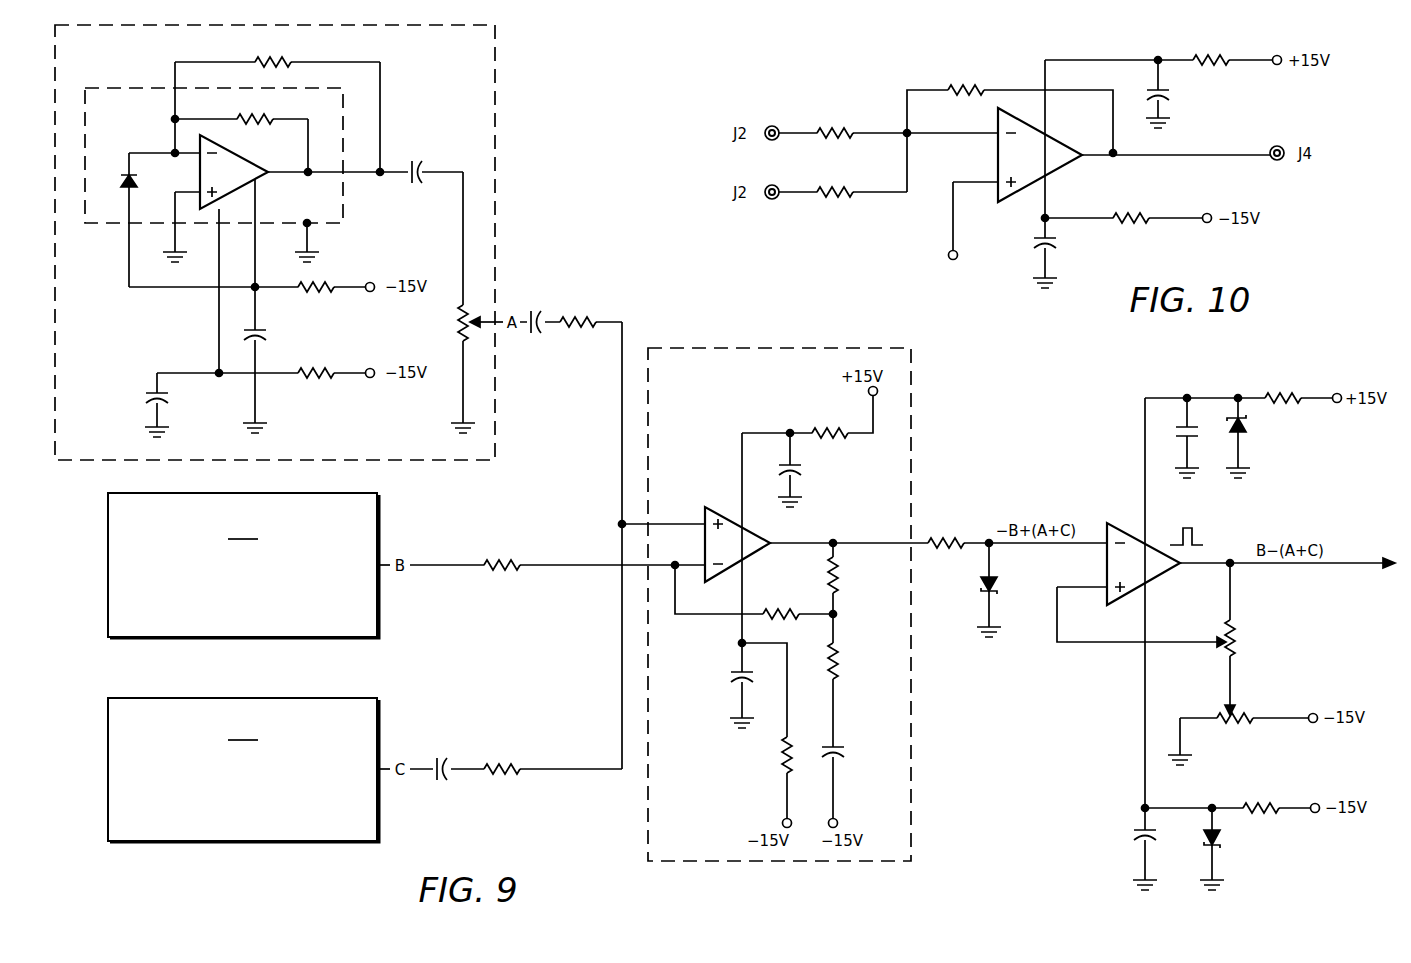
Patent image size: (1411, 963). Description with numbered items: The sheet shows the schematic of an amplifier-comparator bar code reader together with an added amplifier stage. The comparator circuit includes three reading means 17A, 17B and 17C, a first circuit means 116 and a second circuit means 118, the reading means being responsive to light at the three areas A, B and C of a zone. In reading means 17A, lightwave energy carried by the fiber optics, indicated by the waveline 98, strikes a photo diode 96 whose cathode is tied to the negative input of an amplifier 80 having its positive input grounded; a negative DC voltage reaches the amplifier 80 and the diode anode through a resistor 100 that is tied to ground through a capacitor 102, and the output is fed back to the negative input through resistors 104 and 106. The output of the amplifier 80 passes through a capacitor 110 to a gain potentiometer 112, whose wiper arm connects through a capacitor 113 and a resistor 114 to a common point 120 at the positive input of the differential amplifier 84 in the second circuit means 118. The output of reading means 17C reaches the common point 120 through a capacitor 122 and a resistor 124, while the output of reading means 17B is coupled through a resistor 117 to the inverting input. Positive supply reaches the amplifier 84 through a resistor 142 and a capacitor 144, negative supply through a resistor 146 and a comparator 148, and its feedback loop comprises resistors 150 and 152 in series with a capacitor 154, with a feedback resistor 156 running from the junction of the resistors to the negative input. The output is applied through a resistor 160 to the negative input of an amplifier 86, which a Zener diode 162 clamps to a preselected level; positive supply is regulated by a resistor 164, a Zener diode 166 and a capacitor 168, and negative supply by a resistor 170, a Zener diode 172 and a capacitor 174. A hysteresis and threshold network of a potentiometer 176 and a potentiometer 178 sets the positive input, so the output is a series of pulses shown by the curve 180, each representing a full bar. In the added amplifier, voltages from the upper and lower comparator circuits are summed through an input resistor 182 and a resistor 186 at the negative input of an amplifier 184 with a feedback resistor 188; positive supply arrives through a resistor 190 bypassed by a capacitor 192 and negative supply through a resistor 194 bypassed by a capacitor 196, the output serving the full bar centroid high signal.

In FIG. 9, the reading means 17A is at (495, 68).
In FIG. 9, the reading means 17B is at (243, 565).
In FIG. 9, the reading means 17C is at (243, 770).
In FIG. 9, the amplifier 80 is at (218, 166).
In FIG. 9, the differential amplifier 84 is at (723, 506).
In FIG. 9, the amplifier 86 is at (1106, 557).
In FIG. 9, the photo diode 96 is at (137, 183).
In FIG. 9, the waveline 98 is at (118, 176).
In FIG. 9, the resistor 100 is at (325, 282).
In FIG. 9, the capacitor 102 is at (270, 332).
In FIG. 9, the resistor 104 is at (290, 60).
In FIG. 9, the resistor 106 is at (245, 116).
In FIG. 9, the capacitor 110 is at (420, 163).
In FIG. 9, the gain potentiometer 112 is at (456, 310).
In FIG. 9, the capacitor 113 is at (535, 311).
In FIG. 9, the resistor 114 is at (580, 318).
In FIG. 9, the first circuit means 116 is at (584, 247).
In FIG. 9, the resistor 117 is at (502, 560).
In FIG. 9, the second circuit means 118 is at (721, 346).
In FIG. 9, the common point 120 is at (618, 522).
In FIG. 9, the capacitor 122 is at (440, 760).
In FIG. 9, the resistor 124 is at (506, 763).
In FIG. 9, the resistor 142 is at (820, 430).
In FIG. 9, the capacitor 144 is at (806, 466).
In FIG. 9, the resistor 146 is at (777, 758).
In FIG. 9, the comparator 148 is at (732, 677).
In FIG. 9, the resistor 150 is at (842, 574).
In FIG. 9, the resistor 152 is at (842, 665).
In FIG. 9, the capacitor 154 is at (845, 752).
In FIG. 9, the feedback resistor 156 is at (796, 612).
In FIG. 9, the resistor 160 is at (944, 538).
In FIG. 9, the Zener diode 162 is at (978, 584).
In FIG. 9, the resistor 164 is at (1287, 393).
In FIG. 9, the Zener diode 166 is at (1250, 428).
In FIG. 9, the capacitor 168 is at (1176, 432).
In FIG. 9, the resistor 170 is at (1268, 805).
In FIG. 9, the Zener diode 172 is at (1222, 837).
In FIG. 9, the capacitor 174 is at (1135, 837).
In FIG. 9, the potentiometer 176 is at (1252, 639).
In FIG. 9, the potentiometer 178 is at (1237, 728).
In FIG. 9, the curve 180 is at (1197, 532).
In FIG. 10, the input resistor 182 is at (841, 186).
In FIG. 10, the amplifier 184 is at (998, 152).
In FIG. 10, the resistor 186 is at (846, 126).
In FIG. 10, the resistor 188 is at (969, 86).
In FIG. 10, the resistor 190 is at (1213, 55).
In FIG. 10, the capacitor 192 is at (1172, 93).
In FIG. 10, the resistor 194 is at (1138, 213).
In FIG. 10, the capacitor 196 is at (1036, 241).